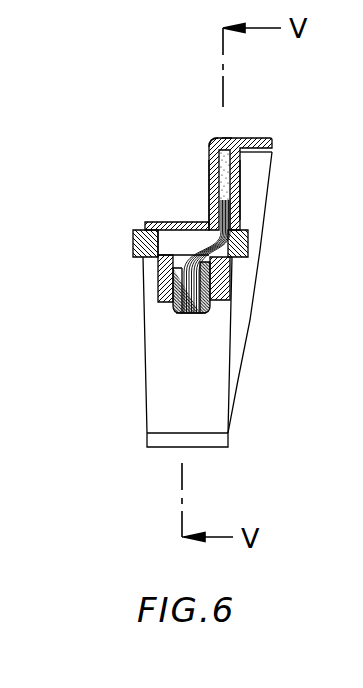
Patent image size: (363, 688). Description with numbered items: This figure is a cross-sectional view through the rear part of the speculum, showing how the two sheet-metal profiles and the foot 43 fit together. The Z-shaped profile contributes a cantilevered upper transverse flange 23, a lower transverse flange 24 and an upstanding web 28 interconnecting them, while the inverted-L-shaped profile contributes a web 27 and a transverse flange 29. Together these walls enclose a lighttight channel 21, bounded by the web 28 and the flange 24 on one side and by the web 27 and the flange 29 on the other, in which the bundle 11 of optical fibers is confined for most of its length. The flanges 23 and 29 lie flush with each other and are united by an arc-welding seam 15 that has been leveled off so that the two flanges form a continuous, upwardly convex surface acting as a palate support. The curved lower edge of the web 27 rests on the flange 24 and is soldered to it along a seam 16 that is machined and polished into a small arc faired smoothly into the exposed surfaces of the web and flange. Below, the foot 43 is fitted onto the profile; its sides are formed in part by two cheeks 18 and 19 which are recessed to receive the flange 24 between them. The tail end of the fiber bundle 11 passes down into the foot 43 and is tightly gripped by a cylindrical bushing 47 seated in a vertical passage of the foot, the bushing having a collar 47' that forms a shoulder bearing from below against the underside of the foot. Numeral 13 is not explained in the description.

The bundle of optical fibers 11 is at (243, 161).
The base portion 13 is at (156, 438).
The arc-welding seam 15 is at (230, 136).
The seam 16 is at (208, 222).
The cheek 18 is at (248, 243).
The cheek 19 is at (137, 251).
The lighttight channel 21 is at (242, 200).
The upper transverse flange 23 is at (263, 138).
The lower transverse flange 24 is at (145, 221).
The web 27 is at (209, 175).
The upstanding web 28 is at (241, 176).
The transverse flange 29 is at (209, 135).
The foot 43 is at (217, 288).
The cylindrical bushing 47 is at (149, 294).
The collar 47' is at (149, 343).